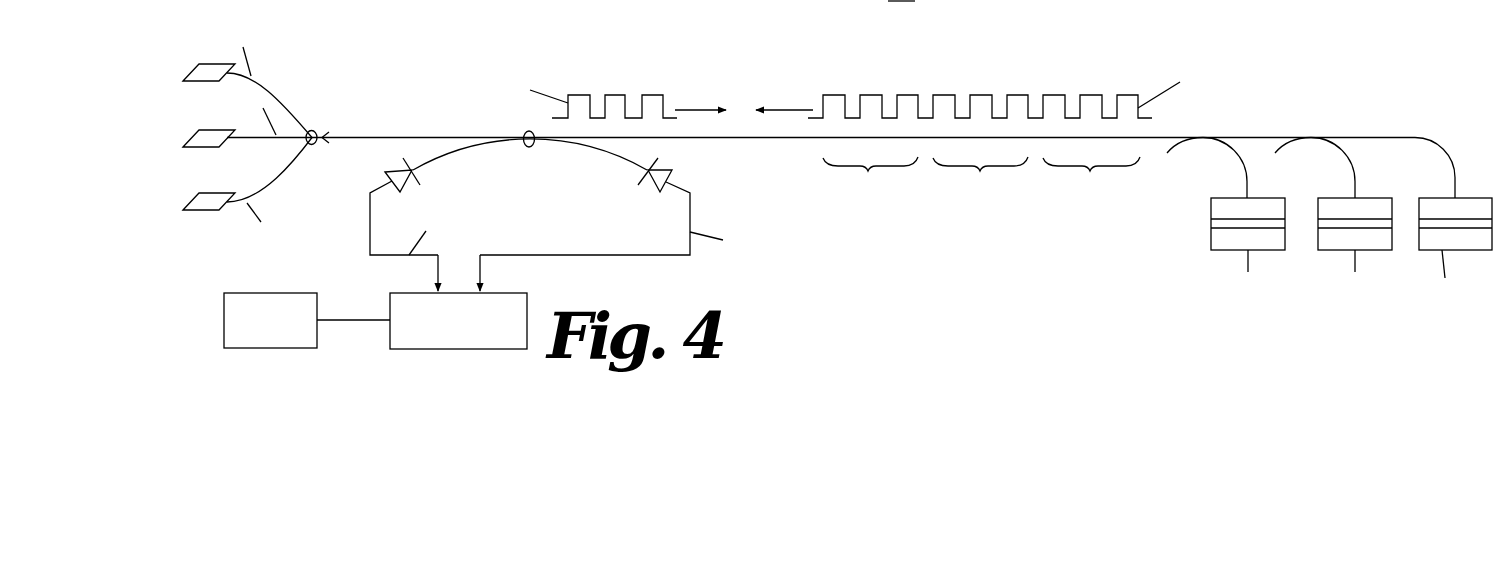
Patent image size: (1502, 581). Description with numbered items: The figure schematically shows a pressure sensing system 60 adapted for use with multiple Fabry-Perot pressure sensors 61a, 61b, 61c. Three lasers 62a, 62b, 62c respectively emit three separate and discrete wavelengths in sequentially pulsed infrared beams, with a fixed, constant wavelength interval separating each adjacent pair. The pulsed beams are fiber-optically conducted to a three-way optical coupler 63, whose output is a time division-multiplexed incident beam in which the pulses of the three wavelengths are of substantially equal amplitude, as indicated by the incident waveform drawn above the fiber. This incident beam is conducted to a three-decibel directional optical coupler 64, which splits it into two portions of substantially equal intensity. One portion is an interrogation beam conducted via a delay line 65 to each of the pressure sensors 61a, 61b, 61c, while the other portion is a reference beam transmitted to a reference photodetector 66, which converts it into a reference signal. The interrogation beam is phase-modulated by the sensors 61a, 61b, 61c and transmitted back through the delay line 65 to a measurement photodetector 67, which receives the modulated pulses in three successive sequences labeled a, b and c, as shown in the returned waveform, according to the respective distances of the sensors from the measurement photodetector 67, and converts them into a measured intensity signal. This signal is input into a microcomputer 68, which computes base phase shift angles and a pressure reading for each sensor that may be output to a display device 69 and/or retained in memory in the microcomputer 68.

The pressure sensing system 60 is at (421, 69).
The Fabry-Perot pressure sensor 61a is at (1226, 227).
The Fabry-Perot pressure sensor 61b is at (1333, 227).
The Fabry-Perot pressure sensor 61c is at (1453, 227).
The laser 62a is at (183, 80).
The laser 62b is at (183, 146).
The laser 62c is at (183, 209).
The three-way optical coupler 63 is at (317, 130).
The 3 dB directional optical coupler 64 is at (526, 147).
The delay line 65 is at (743, 140).
The reference photodetector 66 is at (641, 183).
The measurement photodetector 67 is at (385, 172).
The microcomputer 68 is at (483, 339).
The display device 69 is at (292, 339).